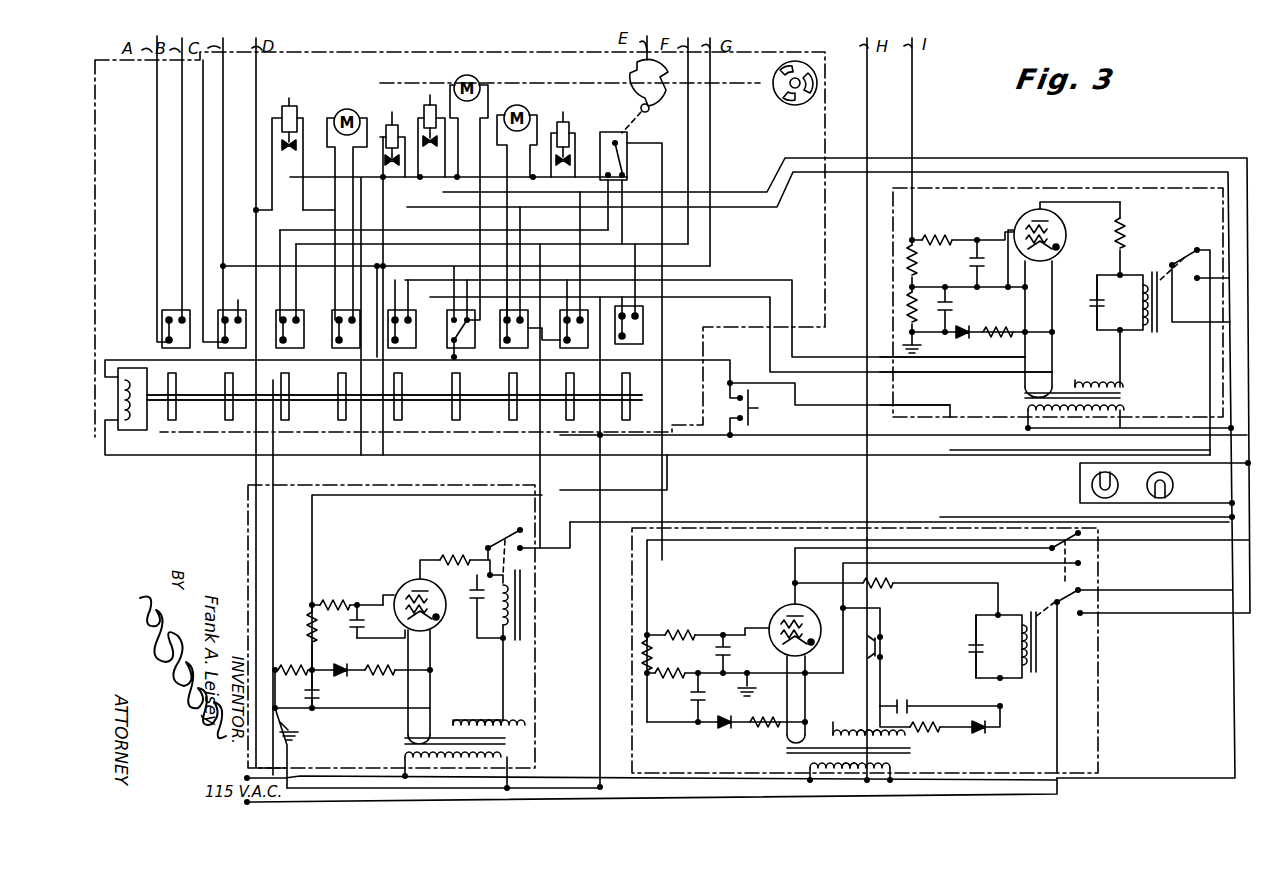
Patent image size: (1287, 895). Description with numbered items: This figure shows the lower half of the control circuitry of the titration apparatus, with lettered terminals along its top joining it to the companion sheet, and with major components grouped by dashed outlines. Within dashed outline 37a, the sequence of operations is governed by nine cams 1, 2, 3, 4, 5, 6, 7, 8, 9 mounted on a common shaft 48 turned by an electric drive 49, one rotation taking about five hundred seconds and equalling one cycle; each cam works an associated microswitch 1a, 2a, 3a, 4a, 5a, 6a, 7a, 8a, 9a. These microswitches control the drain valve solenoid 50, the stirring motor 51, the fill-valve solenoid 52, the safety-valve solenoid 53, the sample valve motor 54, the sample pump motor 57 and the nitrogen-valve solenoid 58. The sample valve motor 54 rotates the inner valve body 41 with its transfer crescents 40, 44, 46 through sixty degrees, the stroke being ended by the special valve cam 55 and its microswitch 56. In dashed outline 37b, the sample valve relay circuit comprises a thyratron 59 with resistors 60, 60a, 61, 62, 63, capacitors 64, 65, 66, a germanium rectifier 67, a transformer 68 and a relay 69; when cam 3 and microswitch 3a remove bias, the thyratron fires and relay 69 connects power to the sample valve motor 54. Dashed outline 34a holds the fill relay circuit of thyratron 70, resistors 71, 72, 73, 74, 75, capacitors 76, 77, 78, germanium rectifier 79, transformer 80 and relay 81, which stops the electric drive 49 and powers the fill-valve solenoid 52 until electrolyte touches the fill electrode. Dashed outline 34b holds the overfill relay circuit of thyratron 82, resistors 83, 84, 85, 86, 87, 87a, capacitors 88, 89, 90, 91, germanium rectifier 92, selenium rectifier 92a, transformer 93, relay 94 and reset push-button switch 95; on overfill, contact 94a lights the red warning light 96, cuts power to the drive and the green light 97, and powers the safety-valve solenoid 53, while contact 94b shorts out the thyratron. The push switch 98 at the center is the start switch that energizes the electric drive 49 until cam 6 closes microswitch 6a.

The cam 1 is at (178, 388).
The cam 2 is at (224, 384).
The cam 3 is at (290, 386).
The cam 4 is at (338, 410).
The cam 5 is at (404, 386).
The cam 6 is at (452, 410).
The cam 7 is at (509, 386).
The cam 8 is at (566, 386).
The cam 9 is at (622, 386).
The microswitch 1a is at (172, 310).
The microswitch 2a is at (236, 310).
The microswitch 3a is at (292, 312).
The microswitch 4a is at (360, 325).
The microswitch 5a is at (396, 310).
The microswitch 6a is at (458, 310).
The microswitch 7a is at (512, 310).
The microswitch 8a is at (570, 310).
The microswitch 9a is at (643, 320).
The electrolyte level or fill relay circuit 34a is at (1113, 188).
The electrolyte overfill relay circuit 34b is at (1100, 668).
The cam and control component outline 37a is at (97, 208).
The sample valve relay circuit 37b is at (246, 500).
The transfer crescent 40 is at (817, 83).
The inner valve body 41 is at (764, 90).
The transfer crescent 44 is at (780, 70).
The transfer crescent 46 is at (786, 104).
The shaft 48 is at (210, 403).
The electric drive 49 is at (135, 368).
The drain valve solenoid 50 is at (289, 100).
The stirring motor 51 is at (348, 108).
The fill-valve solenoid 52 is at (392, 112).
The safety-valve solenoid 53 is at (430, 95).
The sample valve motor 54 is at (478, 80).
The special valve cam 55 is at (626, 72).
The microswitch 56 is at (614, 128).
The sample pump motor 57 is at (526, 108).
The nitrogen-valve solenoid 58 is at (563, 112).
The thyratron 59 is at (404, 597).
The resistor 60 is at (302, 660).
The resistor 60a is at (310, 630).
The resistor 61 is at (378, 664).
The resistor 62 is at (340, 600).
The resistor 63 is at (455, 556).
The capacitor 64 is at (320, 696).
The capacitor 65 is at (350, 624).
The capacitor 66 is at (474, 610).
The germanium rectifier 67 is at (340, 664).
The transformer 68 is at (400, 742).
The relay 69 is at (498, 545).
The thyratron 70 is at (1016, 220).
The resistor 71 is at (916, 312).
The resistor 72 is at (915, 266).
The resistor 73 is at (936, 236).
The resistor 74 is at (997, 327).
The resistor 75 is at (1125, 236).
The capacitor 76 is at (953, 310).
The capacitor 77 is at (984, 262).
The capacitor 78 is at (1090, 300).
The germanium rectifier 79 is at (964, 338).
The transformer 80 is at (1024, 395).
The relay 81 is at (1158, 328).
The thyratron 82 is at (780, 606).
The resistor 83 is at (652, 656).
The resistor 84 is at (670, 680).
The resistor 85 is at (684, 630).
The resistor 86 is at (765, 728).
The resistor 87 is at (888, 588).
The resistor 87a is at (925, 730).
The capacitor 88 is at (705, 696).
The capacitor 89 is at (716, 651).
The capacitor 90 is at (900, 700).
The capacitor 91 is at (969, 636).
The germanium rectifier 92 is at (724, 730).
The selenium rectifier 92a is at (982, 734).
The transformer 93 is at (912, 754).
The relay 94 is at (1028, 680).
The relay contact 94a is at (1052, 600).
The relay contact 94b is at (1050, 546).
The push-button switch 95 is at (884, 640).
The red warning light 96 is at (1092, 485).
The green light 97 is at (1173, 485).
The push switch 98 is at (756, 410).